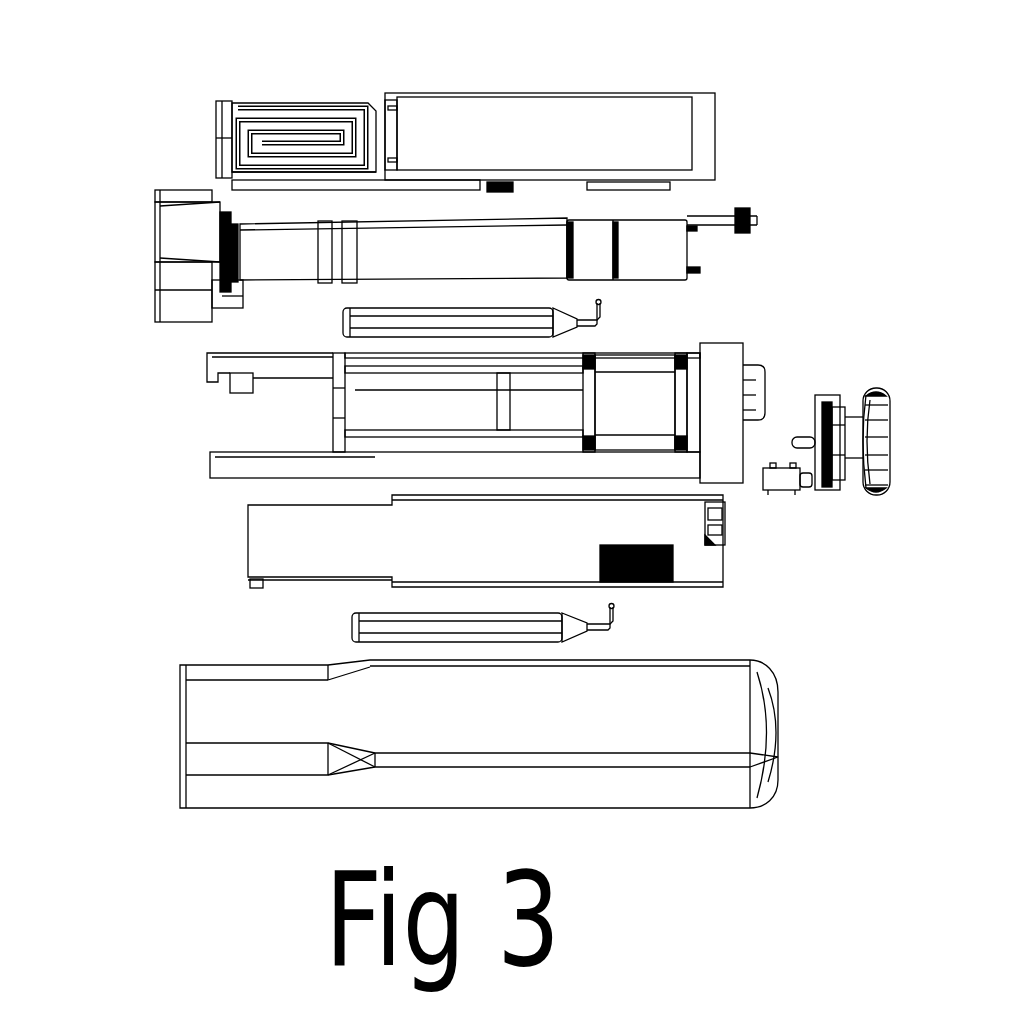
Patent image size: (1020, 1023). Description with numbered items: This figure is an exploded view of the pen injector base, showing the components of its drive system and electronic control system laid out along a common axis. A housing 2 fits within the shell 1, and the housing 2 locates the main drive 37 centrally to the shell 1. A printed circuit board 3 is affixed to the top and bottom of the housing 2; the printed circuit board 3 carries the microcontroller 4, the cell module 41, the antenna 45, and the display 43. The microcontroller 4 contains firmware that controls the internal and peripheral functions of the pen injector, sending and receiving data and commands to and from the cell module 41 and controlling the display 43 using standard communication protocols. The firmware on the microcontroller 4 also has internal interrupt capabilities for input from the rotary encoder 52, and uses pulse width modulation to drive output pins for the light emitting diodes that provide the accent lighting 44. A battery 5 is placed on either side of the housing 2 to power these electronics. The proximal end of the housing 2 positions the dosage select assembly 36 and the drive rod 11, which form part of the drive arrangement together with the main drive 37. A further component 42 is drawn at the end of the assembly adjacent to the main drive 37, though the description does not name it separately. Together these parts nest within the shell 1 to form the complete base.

The shell 1 is at (183, 733).
The housing 2 is at (208, 460).
The printed circuit board 3 is at (248, 530).
The microcontroller 4 is at (747, 609).
The battery 5 is at (340, 322).
The drive rod 11 is at (767, 204).
The dosage select assembly 36 is at (837, 404).
The main drive 37 is at (705, 270).
The cell module 41 is at (353, 175).
The knob 42 is at (140, 256).
The display 43 is at (707, 125).
The accent lighting 44 is at (150, 349).
The antenna 45 is at (206, 86).
The rotary encoder 52 is at (807, 547).